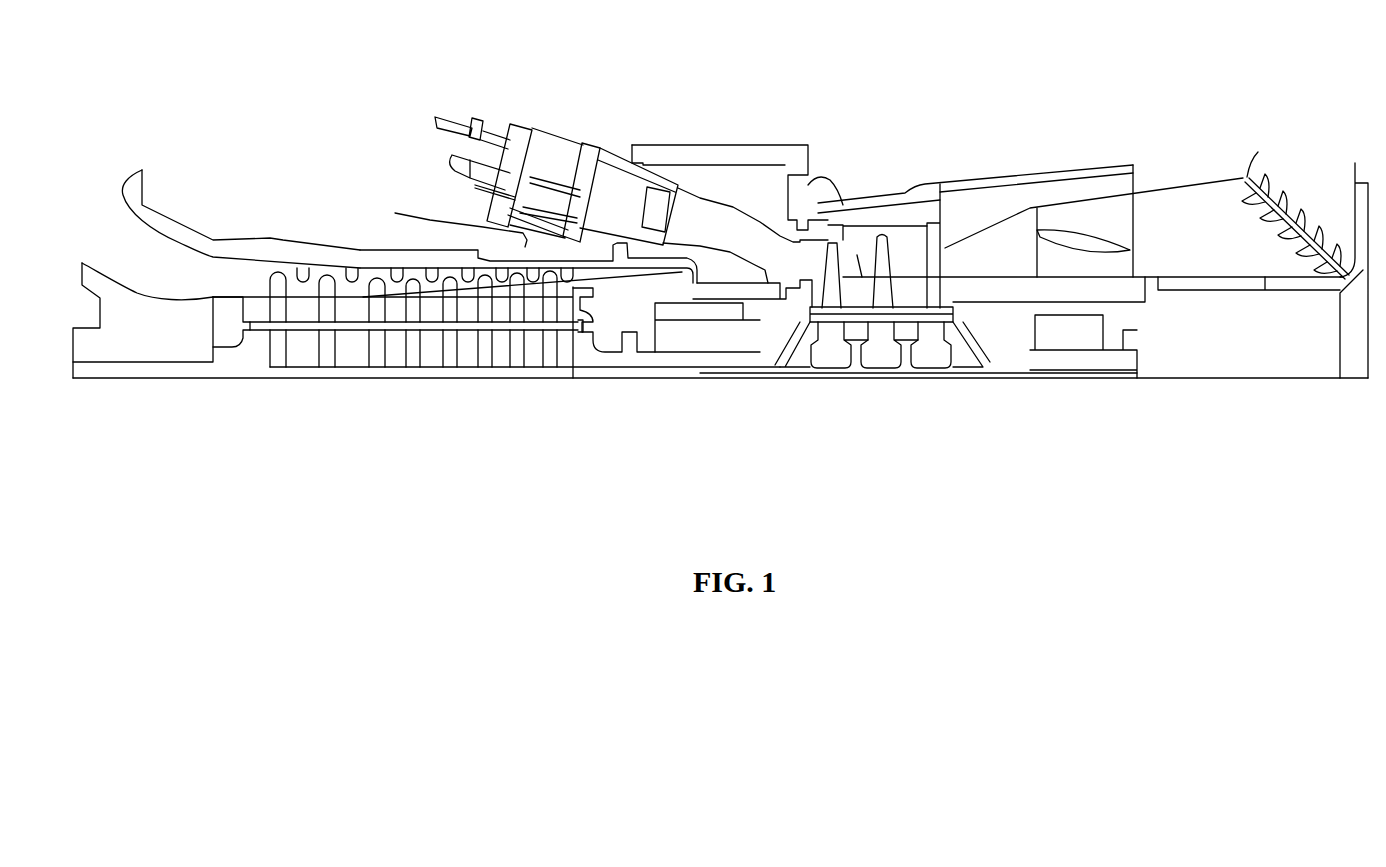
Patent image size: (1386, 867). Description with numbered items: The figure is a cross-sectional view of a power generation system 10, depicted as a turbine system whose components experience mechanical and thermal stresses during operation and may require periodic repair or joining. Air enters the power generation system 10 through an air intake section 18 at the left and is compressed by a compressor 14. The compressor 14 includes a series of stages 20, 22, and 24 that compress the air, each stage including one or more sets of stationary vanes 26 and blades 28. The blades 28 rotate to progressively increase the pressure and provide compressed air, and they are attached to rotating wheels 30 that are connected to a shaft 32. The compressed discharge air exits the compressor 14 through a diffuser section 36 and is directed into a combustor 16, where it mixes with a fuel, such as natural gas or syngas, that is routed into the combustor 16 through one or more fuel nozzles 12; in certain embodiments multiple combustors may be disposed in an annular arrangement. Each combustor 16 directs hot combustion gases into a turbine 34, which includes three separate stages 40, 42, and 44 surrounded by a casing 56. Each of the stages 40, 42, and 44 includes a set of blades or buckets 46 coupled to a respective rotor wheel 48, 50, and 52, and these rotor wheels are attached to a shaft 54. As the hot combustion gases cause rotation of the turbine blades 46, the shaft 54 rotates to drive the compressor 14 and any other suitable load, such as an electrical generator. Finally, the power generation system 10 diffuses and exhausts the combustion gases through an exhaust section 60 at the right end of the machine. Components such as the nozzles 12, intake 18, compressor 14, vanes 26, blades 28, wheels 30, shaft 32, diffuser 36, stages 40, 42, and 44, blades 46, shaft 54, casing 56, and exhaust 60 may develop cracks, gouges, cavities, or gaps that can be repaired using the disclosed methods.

The power generation system 10 is at (728, 50).
The fuel nozzle 12 is at (557, 153).
The compressor 14 is at (530, 216).
The combustor 16 is at (408, 140).
The air intake section 18 is at (140, 273).
The stage 20 is at (413, 386).
The stage 22 is at (487, 386).
The stage 24 is at (546, 386).
The stationary vanes 26 is at (304, 262).
The blades 28 is at (272, 277).
The rotating wheels 30 is at (282, 349).
The shaft 32 is at (303, 323).
The turbine 34 is at (915, 137).
The diffuser section 36 is at (683, 272).
The stage 40 is at (800, 383).
The stage 42 is at (860, 383).
The stage 44 is at (912, 383).
The turbine blades 46 is at (885, 233).
The rotor wheel 48 is at (828, 355).
The rotor wheel 50 is at (882, 355).
The rotor wheel 52 is at (940, 350).
The shaft 54 is at (747, 358).
The casing 56 is at (910, 222).
The exhaust section 60 is at (922, 137).